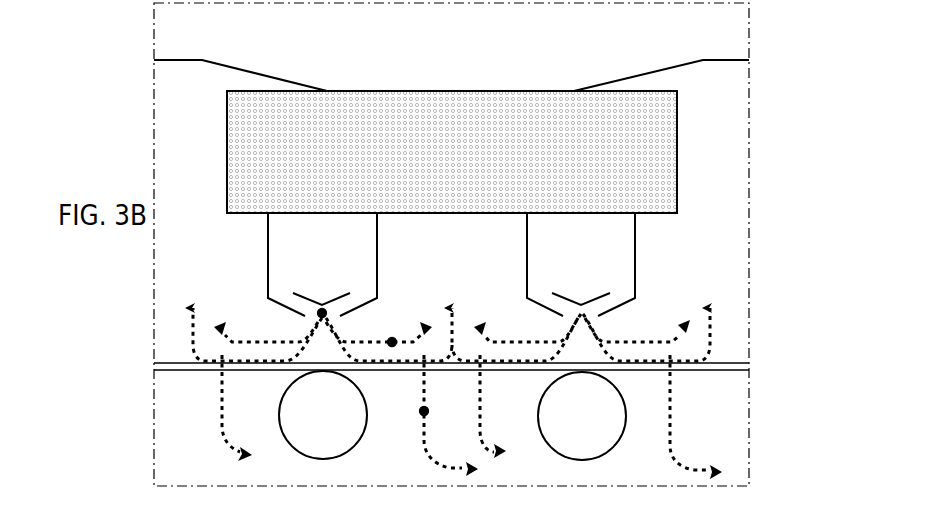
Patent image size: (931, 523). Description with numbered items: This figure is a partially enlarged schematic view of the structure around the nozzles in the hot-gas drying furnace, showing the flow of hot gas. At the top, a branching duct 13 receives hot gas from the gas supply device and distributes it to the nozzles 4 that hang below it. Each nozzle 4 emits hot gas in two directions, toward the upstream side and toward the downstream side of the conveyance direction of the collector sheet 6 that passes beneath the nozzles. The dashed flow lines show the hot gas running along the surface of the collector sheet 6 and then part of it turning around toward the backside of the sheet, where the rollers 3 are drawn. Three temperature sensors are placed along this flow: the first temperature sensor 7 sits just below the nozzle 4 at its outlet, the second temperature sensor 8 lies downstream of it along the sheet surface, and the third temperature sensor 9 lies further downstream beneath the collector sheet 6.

The branching duct 13 is at (718, 34).
The nozzle 4 is at (268, 258).
The collector sheet 6 is at (722, 362).
The conveying roller 3 is at (278, 415).
The first temperature sensor 7 is at (316, 313).
The second temperature sensor 8 is at (392, 338).
The third temperature sensor 9 is at (428, 411).